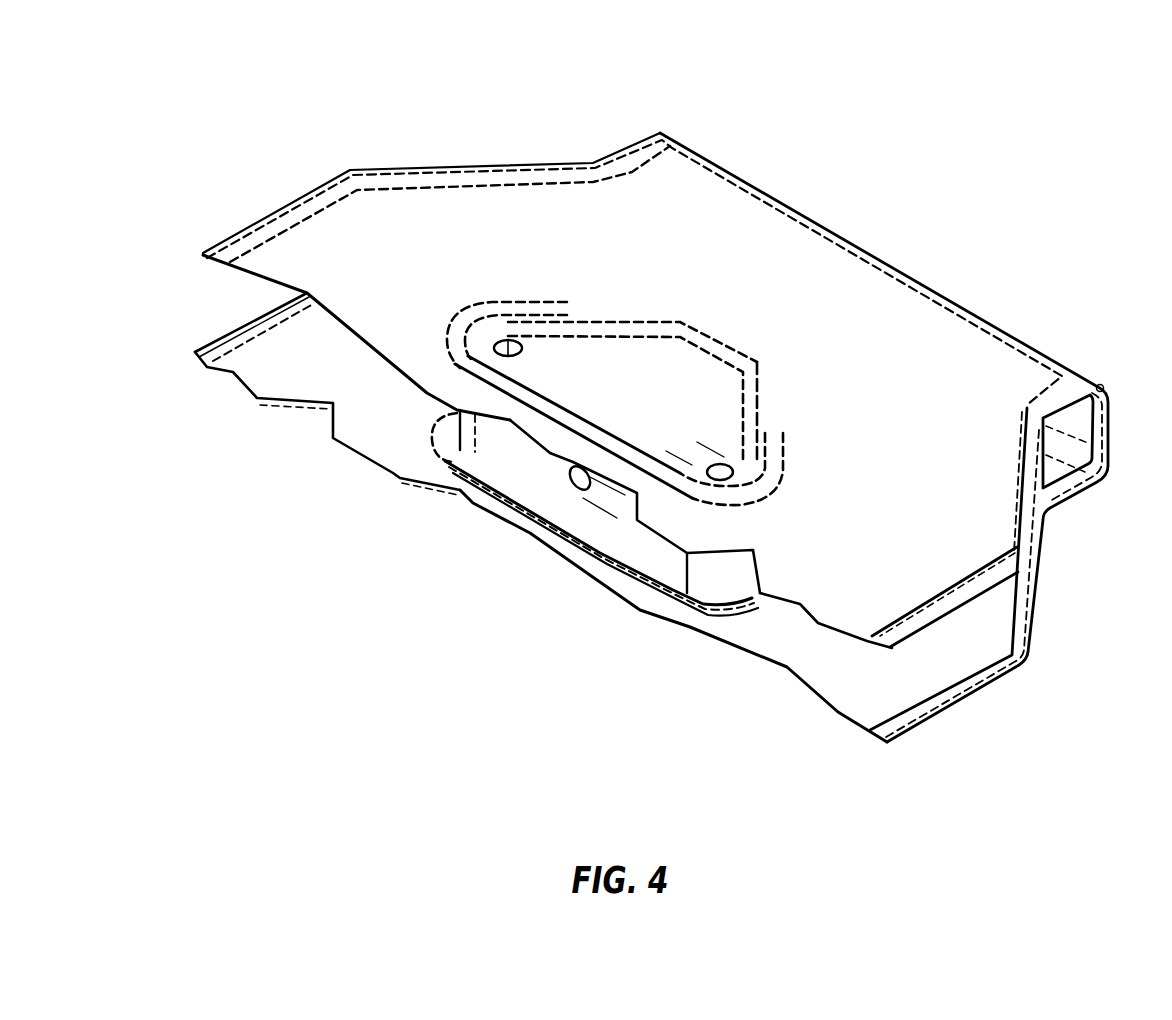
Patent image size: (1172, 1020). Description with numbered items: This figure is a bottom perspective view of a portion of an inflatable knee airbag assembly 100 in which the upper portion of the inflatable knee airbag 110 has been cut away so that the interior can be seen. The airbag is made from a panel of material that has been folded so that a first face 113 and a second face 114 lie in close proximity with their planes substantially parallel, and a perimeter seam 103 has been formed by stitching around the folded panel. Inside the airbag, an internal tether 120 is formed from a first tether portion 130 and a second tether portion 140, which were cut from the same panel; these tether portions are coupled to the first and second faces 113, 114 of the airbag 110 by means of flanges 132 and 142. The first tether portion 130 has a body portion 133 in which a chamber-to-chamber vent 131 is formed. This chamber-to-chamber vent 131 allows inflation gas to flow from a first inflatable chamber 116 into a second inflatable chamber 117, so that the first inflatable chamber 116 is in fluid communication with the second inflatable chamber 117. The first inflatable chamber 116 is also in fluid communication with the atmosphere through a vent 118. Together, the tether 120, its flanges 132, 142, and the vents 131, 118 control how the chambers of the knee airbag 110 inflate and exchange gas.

The inflatable knee airbag assembly 100 is at (1040, 102).
The perimeter seam 103 is at (288, 225).
The inflatable knee airbag 110 is at (735, 200).
The first face 113 is at (335, 370).
The second face 114 is at (430, 263).
The first inflatable chamber 116 is at (773, 617).
The second inflatable chamber 117 is at (722, 402).
The vent 118 is at (497, 344).
The internal tether 120 is at (514, 290).
The first tether portion 130 is at (420, 432).
The chamber-to-chamber vent 131 is at (575, 478).
The flange 132 is at (448, 447).
The body portion 133 is at (518, 458).
The second tether portion 140 is at (690, 316).
The flange 142 is at (715, 347).